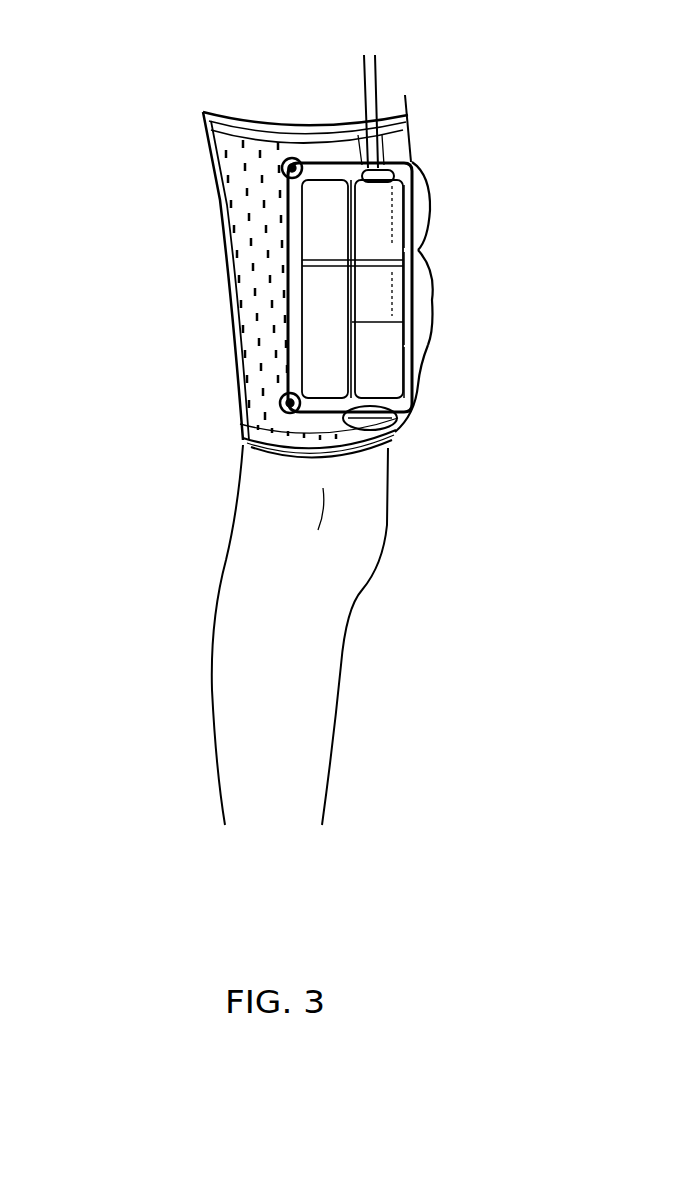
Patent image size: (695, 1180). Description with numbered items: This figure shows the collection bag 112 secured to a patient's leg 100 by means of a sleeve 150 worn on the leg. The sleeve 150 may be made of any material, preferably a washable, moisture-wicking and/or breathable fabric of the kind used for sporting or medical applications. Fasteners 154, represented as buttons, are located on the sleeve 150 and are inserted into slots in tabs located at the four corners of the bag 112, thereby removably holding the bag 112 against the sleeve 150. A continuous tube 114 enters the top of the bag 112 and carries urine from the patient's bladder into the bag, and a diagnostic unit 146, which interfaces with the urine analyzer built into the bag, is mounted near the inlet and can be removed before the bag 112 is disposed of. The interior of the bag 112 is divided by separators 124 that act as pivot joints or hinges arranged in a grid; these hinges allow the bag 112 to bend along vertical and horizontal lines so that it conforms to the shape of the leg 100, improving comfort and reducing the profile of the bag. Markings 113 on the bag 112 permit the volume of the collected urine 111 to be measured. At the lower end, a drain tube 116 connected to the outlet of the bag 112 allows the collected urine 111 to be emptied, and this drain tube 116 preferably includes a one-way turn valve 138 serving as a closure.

The patient's leg 100 is at (197, 636).
The sleeve 150 is at (203, 170).
The one-way turn valve 138 is at (392, 462).
The separators 124 is at (290, 290).
The fasteners 154 is at (290, 157).
The continuous tube 114 is at (373, 90).
The diagnostic unit 146 is at (414, 158).
The collection bag 112 is at (447, 210).
The markings 113 is at (435, 288).
The urine 111 is at (423, 350).
The drain tube 116 is at (400, 430).